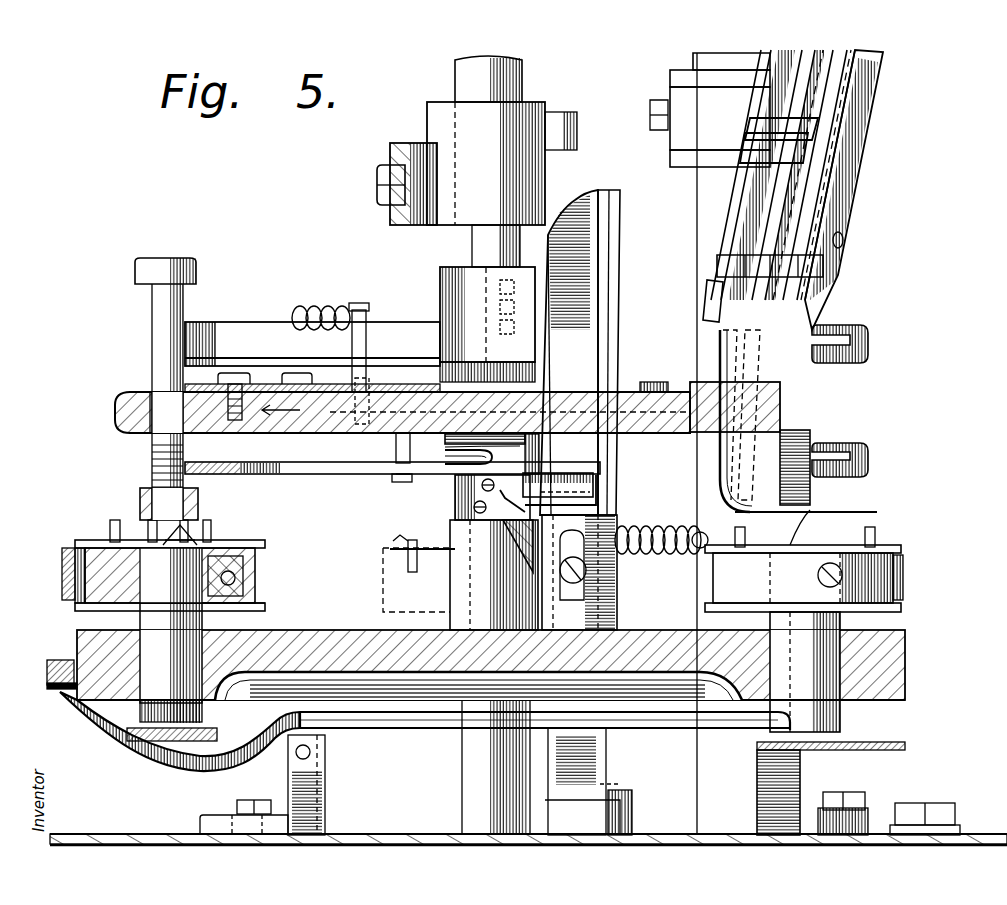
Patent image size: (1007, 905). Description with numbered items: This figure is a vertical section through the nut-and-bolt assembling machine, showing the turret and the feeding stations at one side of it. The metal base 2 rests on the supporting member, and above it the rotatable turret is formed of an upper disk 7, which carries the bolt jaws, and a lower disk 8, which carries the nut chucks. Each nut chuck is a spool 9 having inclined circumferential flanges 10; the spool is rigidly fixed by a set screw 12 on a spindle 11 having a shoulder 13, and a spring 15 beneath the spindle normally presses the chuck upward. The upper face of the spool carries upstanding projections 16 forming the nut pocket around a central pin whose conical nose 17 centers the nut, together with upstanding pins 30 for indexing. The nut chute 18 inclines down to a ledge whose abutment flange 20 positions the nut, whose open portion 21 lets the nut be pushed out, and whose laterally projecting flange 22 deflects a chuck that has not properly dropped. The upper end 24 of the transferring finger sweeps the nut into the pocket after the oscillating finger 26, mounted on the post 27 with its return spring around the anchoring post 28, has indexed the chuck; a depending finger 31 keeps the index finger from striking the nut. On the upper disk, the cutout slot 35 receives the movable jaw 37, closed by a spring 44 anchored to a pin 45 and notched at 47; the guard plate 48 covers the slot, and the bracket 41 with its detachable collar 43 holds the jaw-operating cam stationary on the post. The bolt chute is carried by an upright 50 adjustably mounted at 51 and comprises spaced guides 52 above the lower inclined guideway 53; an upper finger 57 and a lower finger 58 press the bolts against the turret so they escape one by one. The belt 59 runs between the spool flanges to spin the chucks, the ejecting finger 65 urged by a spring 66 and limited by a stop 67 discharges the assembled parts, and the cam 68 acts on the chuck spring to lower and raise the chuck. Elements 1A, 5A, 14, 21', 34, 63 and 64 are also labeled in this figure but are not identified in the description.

The bolt 1A is at (845, 650).
The metal base 2 is at (346, 833).
The bar 5A is at (845, 545).
The upper disk 7 is at (160, 420).
The lower disk 8 is at (88, 646).
The spool 9 is at (105, 540).
The inclined circumferential flanges 10 is at (80, 545).
The spindle 11 is at (230, 556).
The set screw 12 is at (236, 578).
The shoulder 13 is at (203, 612).
The stem 14 is at (155, 619).
The spring 15 is at (178, 768).
The upstanding projections 16 is at (176, 525).
The conical nose 17 is at (200, 522).
The nut chute 18 is at (595, 258).
The abutment flange 20 is at (595, 485).
The open portion of ledge 21 is at (587, 493).
The spring 21' is at (661, 574).
The laterally projecting flange 22 is at (500, 500).
The upper end of Z-shaped finger 24 is at (765, 470).
The oscillating finger 26 is at (455, 512).
The post 27 is at (515, 82).
The anchoring post 28 is at (622, 210).
The upstanding pins 30 is at (115, 518).
The depending finger 31 is at (405, 560).
The housing 34 is at (455, 628).
The cutout slot 35 is at (600, 462).
The movable jaw 37 is at (125, 405).
The bracket 41 is at (395, 205).
The detachable collar 43 is at (425, 223).
The spring 44 is at (325, 296).
The pin 45 is at (358, 305).
The notch 47 is at (145, 425).
The guard plate 48 is at (200, 384).
The upright 50 is at (808, 770).
The adjustable mounting 51 is at (880, 820).
The spaced guides 52 is at (805, 178).
The lower inclined guideway 53 is at (855, 210).
The upper finger 57 is at (870, 340).
The lower finger 58 is at (870, 450).
The belt 59 is at (63, 556).
The plate 63 is at (220, 330).
The plate edge 64 is at (312, 351).
The ejecting finger 65 is at (222, 470).
The spring 66 is at (380, 470).
The stop 67 is at (395, 455).
The cam 68 is at (57, 690).